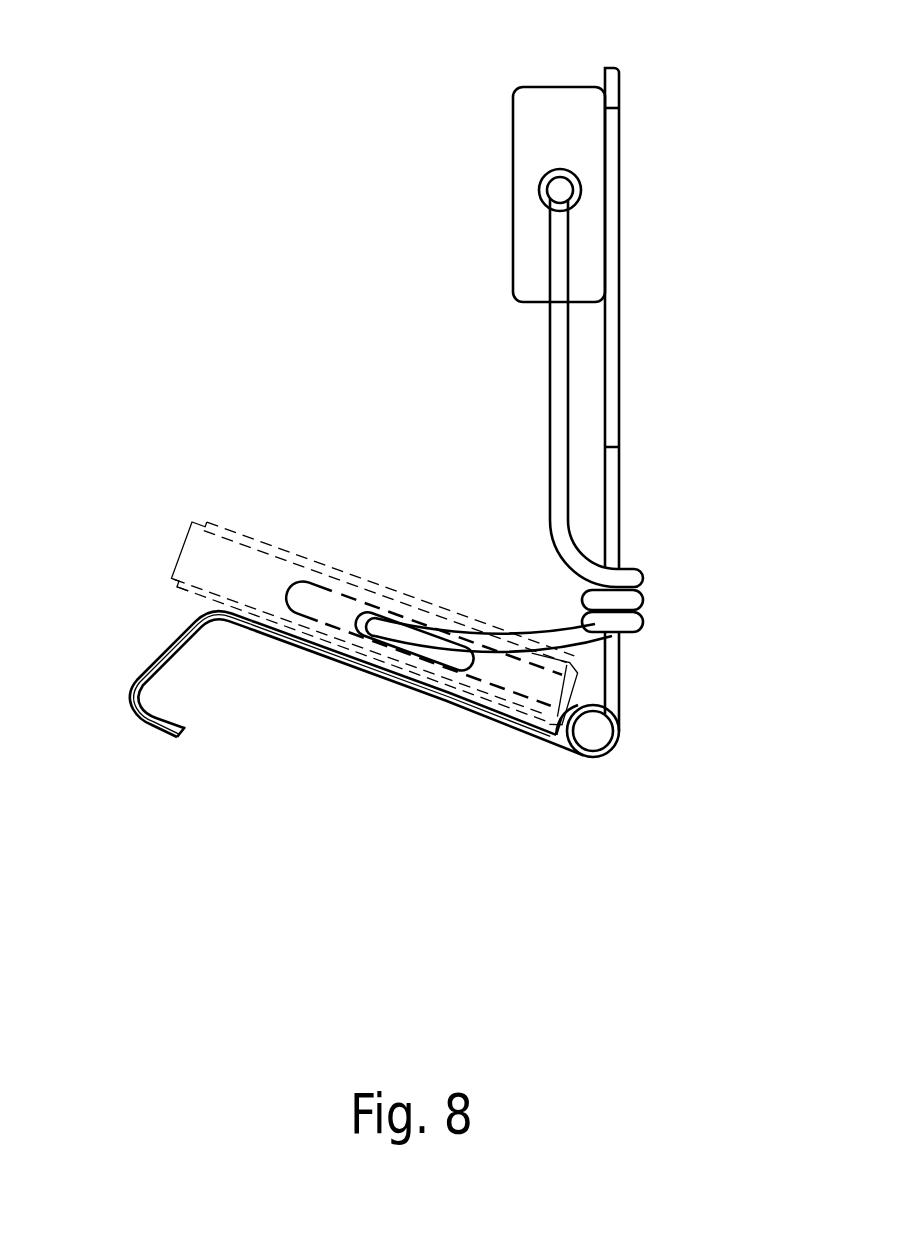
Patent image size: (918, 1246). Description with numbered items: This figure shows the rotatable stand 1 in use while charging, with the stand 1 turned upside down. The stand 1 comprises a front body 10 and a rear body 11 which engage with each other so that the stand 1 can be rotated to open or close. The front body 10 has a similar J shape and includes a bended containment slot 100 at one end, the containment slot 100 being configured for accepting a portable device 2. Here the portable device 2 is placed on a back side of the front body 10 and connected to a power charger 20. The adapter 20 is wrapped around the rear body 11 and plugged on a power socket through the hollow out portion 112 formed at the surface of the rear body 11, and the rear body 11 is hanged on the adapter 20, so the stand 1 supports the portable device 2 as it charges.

The stand 1 is at (282, 180).
The portable device 2 is at (200, 552).
The front body 10 is at (437, 707).
The containment slot 100 is at (202, 692).
The rear body 11 is at (615, 85).
The hollow out portion 112 is at (625, 273).
The power charger 20 is at (552, 98).